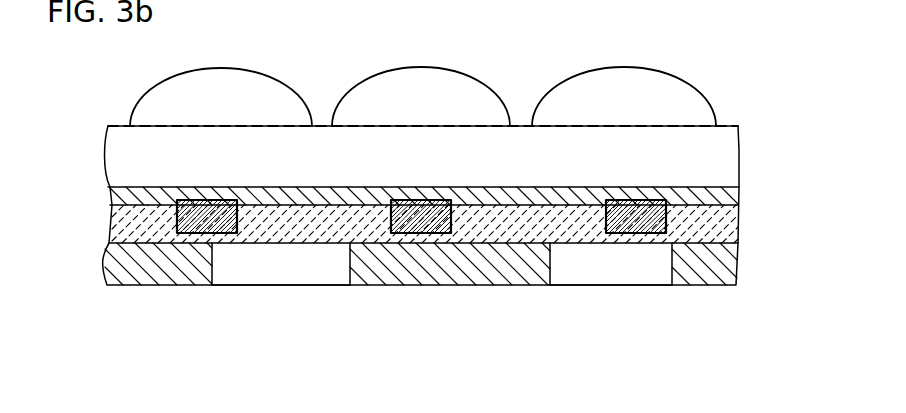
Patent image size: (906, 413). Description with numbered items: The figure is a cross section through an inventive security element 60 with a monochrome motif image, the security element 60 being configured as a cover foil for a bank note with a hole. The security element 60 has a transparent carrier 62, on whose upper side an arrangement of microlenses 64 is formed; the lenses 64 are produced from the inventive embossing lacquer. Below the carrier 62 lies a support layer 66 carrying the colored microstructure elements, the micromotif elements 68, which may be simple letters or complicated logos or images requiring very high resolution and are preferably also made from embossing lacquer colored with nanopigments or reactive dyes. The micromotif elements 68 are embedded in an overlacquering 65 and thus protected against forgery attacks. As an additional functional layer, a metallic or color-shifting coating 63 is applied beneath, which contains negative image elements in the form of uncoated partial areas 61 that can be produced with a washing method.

The security element 60 is at (115, 95).
The uncoated partial areas 61 is at (607, 275).
The transparent carrier 62 is at (727, 150).
The metallic or color-shifting coating 63 is at (730, 271).
The microlenses 64 is at (693, 100).
The overlacquering 65 is at (733, 224).
The support layer 66 is at (737, 196).
The micromotif elements 68 is at (220, 228).